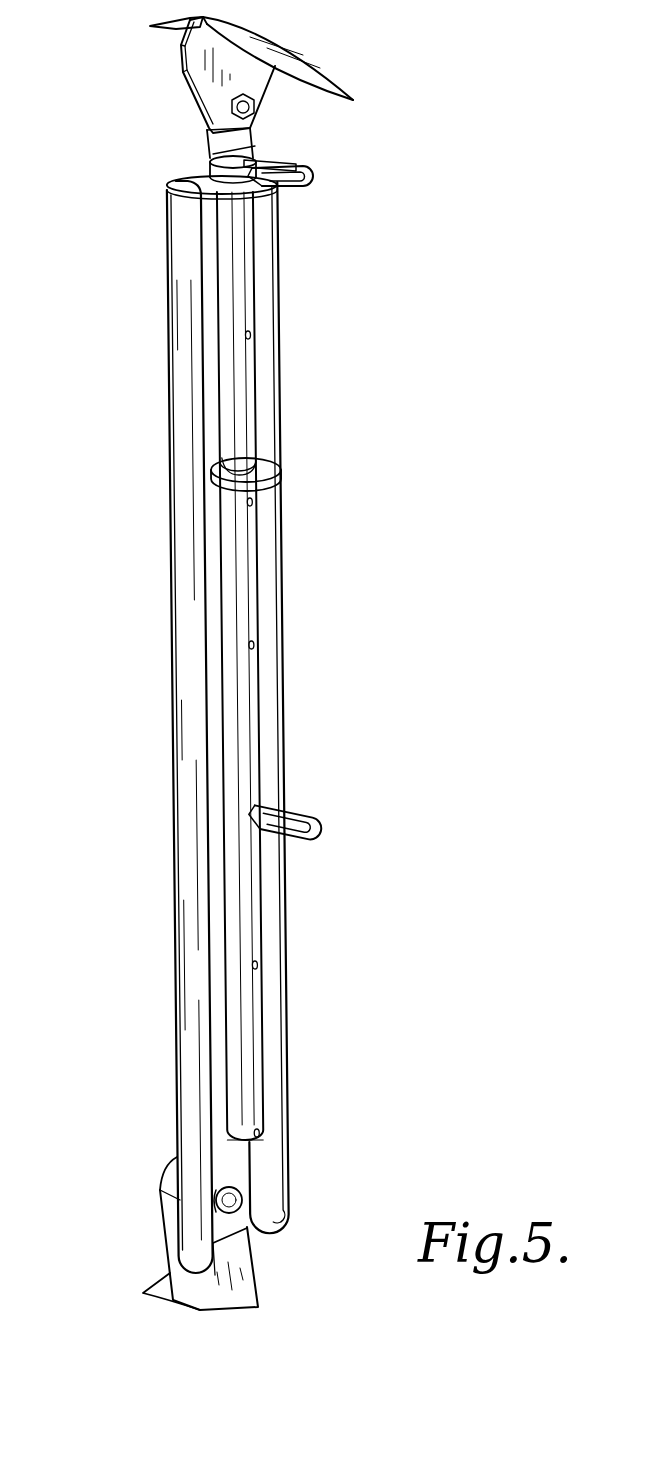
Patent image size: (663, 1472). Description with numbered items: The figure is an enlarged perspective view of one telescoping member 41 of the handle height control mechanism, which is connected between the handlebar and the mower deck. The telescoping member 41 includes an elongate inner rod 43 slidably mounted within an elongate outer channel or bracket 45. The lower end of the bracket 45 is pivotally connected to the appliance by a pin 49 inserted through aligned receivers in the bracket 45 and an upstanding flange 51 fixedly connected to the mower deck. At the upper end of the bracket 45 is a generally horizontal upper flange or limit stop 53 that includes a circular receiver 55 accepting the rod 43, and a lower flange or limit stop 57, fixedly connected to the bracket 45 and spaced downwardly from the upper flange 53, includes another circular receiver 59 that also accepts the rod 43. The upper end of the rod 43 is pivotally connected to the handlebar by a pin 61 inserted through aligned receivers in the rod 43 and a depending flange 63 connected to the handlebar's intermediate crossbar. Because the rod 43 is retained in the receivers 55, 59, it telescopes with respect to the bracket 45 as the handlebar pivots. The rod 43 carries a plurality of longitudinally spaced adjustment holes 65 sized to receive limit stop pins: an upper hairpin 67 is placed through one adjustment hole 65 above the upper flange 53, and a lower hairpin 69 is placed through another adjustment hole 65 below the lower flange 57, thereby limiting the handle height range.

The telescoping member 41 is at (148, 703).
The rod 43 is at (257, 410).
The bracket 45 is at (278, 285).
The pin 49 is at (242, 1198).
The upstanding flange 51 is at (235, 1282).
The upper flange or limit stop 53 is at (263, 155).
The circular receiver 55 is at (207, 156).
The lower flange or limit stop 57 is at (278, 465).
The circular receiver 59 is at (228, 447).
The pin 61 is at (255, 108).
The depending flange 63 is at (181, 57).
The adjustment holes 65 is at (249, 335).
The upper hairpin 67 is at (316, 178).
The lower hairpin 69 is at (323, 815).